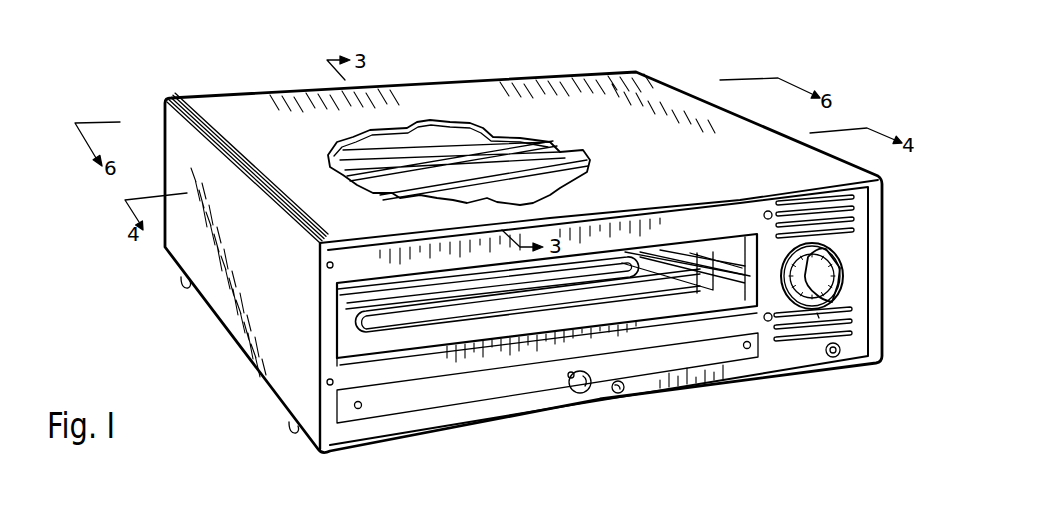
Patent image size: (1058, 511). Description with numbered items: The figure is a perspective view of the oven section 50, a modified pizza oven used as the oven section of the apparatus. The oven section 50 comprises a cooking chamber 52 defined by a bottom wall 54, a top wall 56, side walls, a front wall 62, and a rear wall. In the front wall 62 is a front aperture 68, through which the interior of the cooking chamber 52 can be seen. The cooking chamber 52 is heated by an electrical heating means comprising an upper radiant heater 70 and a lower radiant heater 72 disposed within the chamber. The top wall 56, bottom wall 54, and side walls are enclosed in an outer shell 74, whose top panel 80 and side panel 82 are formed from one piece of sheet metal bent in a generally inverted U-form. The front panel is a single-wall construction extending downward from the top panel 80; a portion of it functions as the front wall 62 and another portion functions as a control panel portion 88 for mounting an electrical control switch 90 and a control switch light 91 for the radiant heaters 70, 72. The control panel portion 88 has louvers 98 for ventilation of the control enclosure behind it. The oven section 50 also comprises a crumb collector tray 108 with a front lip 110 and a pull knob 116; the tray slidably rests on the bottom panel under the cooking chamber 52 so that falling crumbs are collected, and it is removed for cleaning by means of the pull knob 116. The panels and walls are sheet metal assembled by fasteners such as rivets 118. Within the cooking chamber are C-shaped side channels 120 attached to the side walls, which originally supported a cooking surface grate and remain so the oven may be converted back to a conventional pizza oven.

The oven section 50 is at (550, 60).
The cooking chamber 52 is at (655, 290).
The bottom wall 54 is at (350, 370).
The top wall 56 is at (403, 140).
The front wall 62 is at (342, 362).
The front aperture 68 is at (690, 258).
The upper radiant heater 70 is at (438, 147).
The lower radiant heater 72 is at (382, 338).
The outer shell 74 is at (166, 254).
The top panel 80 is at (245, 118).
The side panel 82 is at (223, 308).
The control panel portion 88 is at (850, 255).
The electrical control switch 90 is at (817, 313).
The control switch light 91 is at (840, 357).
The louvers 98 is at (853, 214).
The crumb collector tray 108 is at (495, 392).
The front lip 110 is at (447, 393).
The pull knob 116 is at (580, 395).
The rivets 118 is at (326, 266).
The C-shaped side channels 120 is at (678, 252).